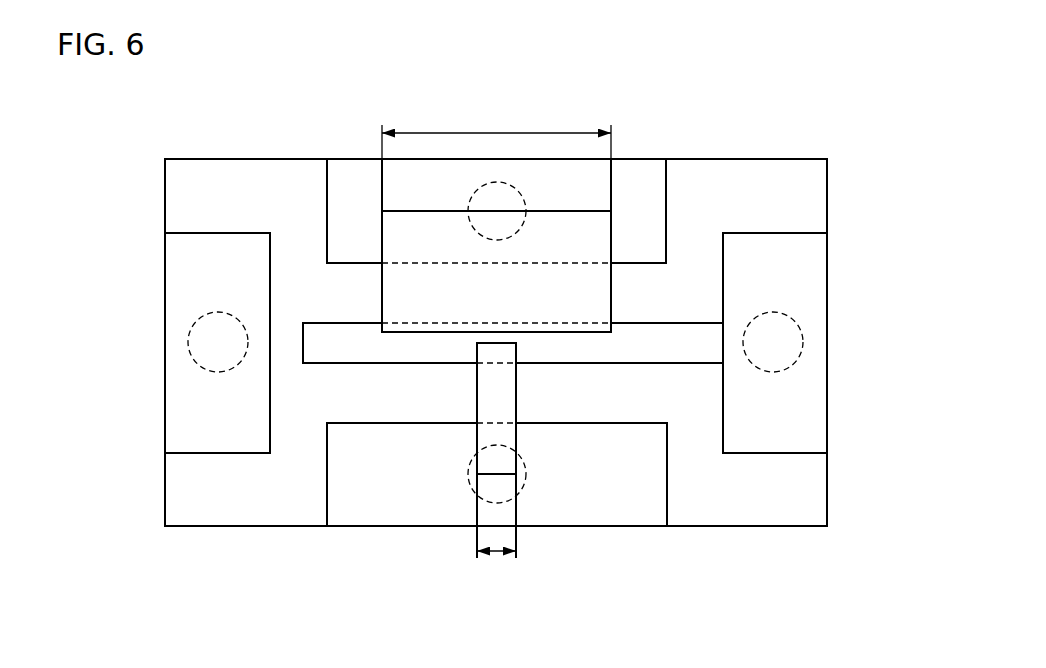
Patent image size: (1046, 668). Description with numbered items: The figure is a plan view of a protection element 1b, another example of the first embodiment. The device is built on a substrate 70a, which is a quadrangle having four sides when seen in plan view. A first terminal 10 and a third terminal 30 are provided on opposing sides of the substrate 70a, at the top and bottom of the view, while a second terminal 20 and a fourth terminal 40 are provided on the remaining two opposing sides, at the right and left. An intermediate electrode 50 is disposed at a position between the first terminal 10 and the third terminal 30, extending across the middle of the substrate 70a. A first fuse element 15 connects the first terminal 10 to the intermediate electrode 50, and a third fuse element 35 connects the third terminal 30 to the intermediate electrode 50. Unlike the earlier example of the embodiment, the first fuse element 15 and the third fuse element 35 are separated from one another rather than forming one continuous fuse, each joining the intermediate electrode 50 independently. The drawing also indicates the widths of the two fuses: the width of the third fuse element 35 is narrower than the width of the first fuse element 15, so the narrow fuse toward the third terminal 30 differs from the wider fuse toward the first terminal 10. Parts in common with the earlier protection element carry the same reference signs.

The protection element 1b is at (806, 117).
The first terminal 10 is at (336, 156).
The first fuse element 15 is at (598, 245).
The second terminal 20 is at (829, 268).
The third terminal 30 is at (634, 531).
The third fuse element 35 is at (478, 427).
The fourth terminal 40 is at (164, 422).
The intermediate electrode 50 is at (693, 355).
The substrate 70a is at (817, 188).